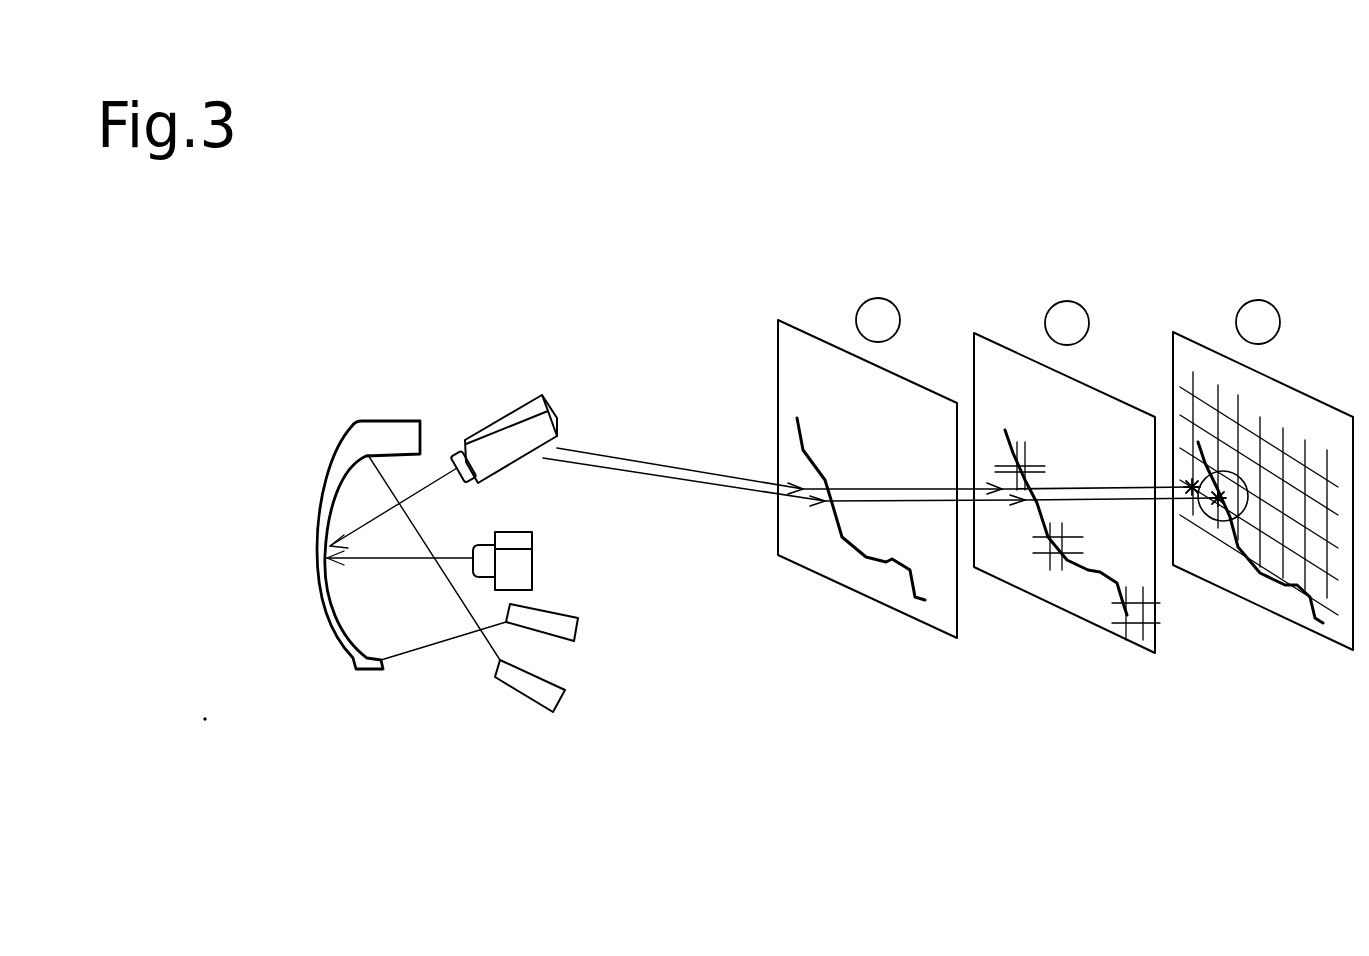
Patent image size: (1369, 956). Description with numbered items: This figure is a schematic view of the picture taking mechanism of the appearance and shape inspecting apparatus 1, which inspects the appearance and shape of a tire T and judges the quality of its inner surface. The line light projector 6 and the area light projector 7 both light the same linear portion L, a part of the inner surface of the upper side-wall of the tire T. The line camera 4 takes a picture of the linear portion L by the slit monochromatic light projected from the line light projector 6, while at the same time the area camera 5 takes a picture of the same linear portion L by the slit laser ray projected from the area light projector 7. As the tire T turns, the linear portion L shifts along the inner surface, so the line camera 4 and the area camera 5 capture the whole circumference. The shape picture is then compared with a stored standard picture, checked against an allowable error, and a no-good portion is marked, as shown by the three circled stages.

The appearance and shape inspecting apparatus 1 is at (632, 283).
The tire T is at (343, 432).
The linear portion L is at (333, 597).
The line camera 4 is at (532, 559).
The area camera 5 is at (517, 408).
The line light projector 6 is at (578, 625).
The area light projector 7 is at (565, 698).